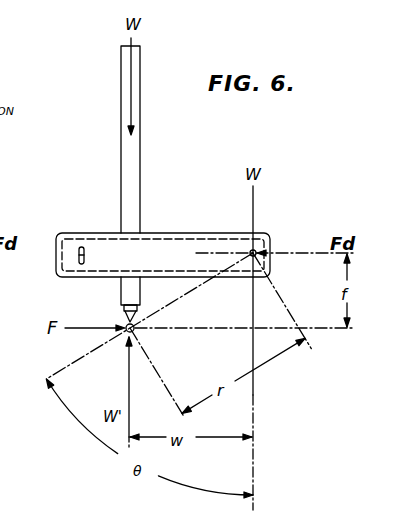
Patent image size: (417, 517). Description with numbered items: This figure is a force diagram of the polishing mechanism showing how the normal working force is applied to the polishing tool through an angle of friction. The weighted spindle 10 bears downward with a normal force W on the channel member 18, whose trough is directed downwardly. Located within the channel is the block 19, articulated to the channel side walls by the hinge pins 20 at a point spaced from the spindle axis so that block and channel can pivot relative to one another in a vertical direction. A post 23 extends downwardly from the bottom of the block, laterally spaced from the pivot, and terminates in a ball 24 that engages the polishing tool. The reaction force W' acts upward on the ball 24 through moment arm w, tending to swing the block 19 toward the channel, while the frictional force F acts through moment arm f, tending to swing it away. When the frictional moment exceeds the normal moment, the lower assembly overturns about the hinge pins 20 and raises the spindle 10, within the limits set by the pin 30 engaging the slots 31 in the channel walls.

The spindle 10 is at (125, 161).
The channel member 18 is at (209, 233).
The block 19 is at (104, 270).
The hinge pins 20 is at (258, 251).
The post 23 is at (122, 293).
The ball 24 is at (125, 340).
The pin 30 is at (78, 251).
The slots 31 is at (78, 260).